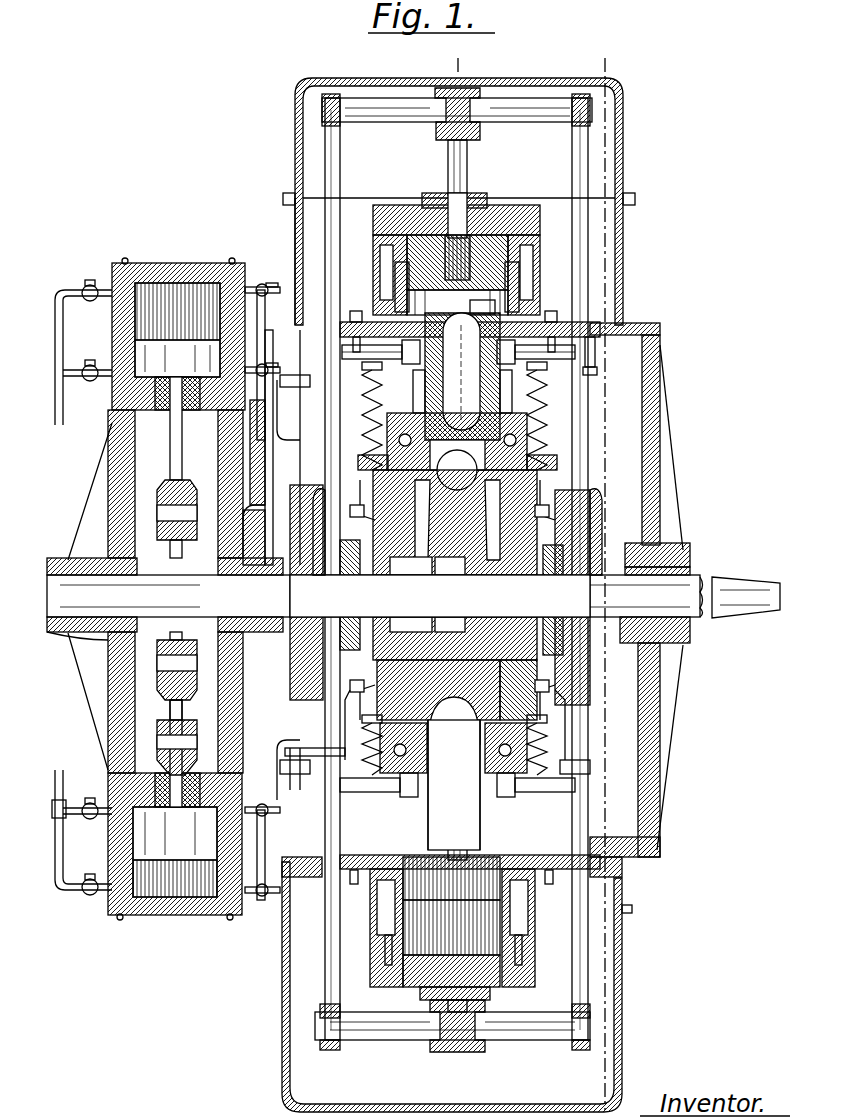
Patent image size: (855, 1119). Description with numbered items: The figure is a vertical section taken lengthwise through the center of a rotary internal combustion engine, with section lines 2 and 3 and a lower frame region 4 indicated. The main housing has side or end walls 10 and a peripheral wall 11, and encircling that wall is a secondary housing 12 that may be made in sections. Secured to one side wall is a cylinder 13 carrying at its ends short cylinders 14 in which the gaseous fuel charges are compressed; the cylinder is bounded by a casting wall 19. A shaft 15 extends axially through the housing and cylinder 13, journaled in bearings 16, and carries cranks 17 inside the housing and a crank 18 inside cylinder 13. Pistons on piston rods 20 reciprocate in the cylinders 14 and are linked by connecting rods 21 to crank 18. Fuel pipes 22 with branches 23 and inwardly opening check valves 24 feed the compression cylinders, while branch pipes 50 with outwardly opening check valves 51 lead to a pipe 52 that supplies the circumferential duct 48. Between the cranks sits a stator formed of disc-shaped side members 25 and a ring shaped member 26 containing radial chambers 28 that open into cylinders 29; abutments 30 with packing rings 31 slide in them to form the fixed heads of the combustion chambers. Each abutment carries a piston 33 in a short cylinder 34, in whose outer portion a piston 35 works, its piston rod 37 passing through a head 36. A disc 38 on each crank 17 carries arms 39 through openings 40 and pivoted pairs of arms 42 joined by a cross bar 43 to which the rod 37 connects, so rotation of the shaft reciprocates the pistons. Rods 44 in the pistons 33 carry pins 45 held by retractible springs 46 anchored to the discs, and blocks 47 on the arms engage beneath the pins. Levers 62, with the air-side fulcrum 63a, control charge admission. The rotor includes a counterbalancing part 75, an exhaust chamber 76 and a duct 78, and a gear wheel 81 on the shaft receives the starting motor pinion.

The section line 2 is at (616, 62).
The section line 3 is at (472, 64).
The lower frame section 4 is at (580, 828).
The side or end wall 10 is at (662, 380).
The peripheral wall 11 is at (650, 335).
The secondary housing 12 is at (625, 180).
The cylinder 13 is at (108, 705).
The short cylinder 14 is at (205, 290).
The shaft 15 is at (680, 598).
The bearing 16 is at (665, 555).
The crank 17 is at (612, 545).
The crank 18 is at (108, 652).
The cylinder 19 is at (165, 283).
The piston rod 20 is at (170, 455).
The connecting rod 21 is at (182, 545).
The pipe 22 is at (55, 340).
The branch pipe 23 is at (86, 800).
The check valve 24 is at (90, 300).
The side member 25 is at (438, 755).
The ring shaped member 26 is at (540, 440).
The chamber 28 is at (420, 440).
The cylinder 29 is at (485, 398).
The abutment 30 is at (500, 300).
The packing ring 31 is at (428, 378).
The piston 33 is at (500, 250).
The short cylinder 34 is at (515, 275).
The piston 35 is at (430, 200).
The head 36 is at (490, 205).
The piston rod 37 is at (462, 160).
The disc 38 is at (300, 540).
The arm 39 is at (300, 262).
The opening 40 is at (355, 320).
The arm 42 is at (290, 955).
The cross bar 43 is at (415, 100).
The rod 44 is at (520, 330).
The pin 45 is at (590, 330).
The retractible spring 46 is at (360, 425).
The block 47 is at (340, 390).
The circumferential duct 48 is at (395, 760).
The branch pipe 50 is at (265, 905).
The check valve 51 is at (258, 285).
The pipe 52 is at (295, 455).
The lever 62 is at (560, 675).
The fulcrum 63a is at (560, 695).
The rotor part 75 is at (508, 690).
The exhaust chamber 76 is at (450, 594).
The duct 78 is at (455, 565).
The gear wheel 81 is at (310, 728).